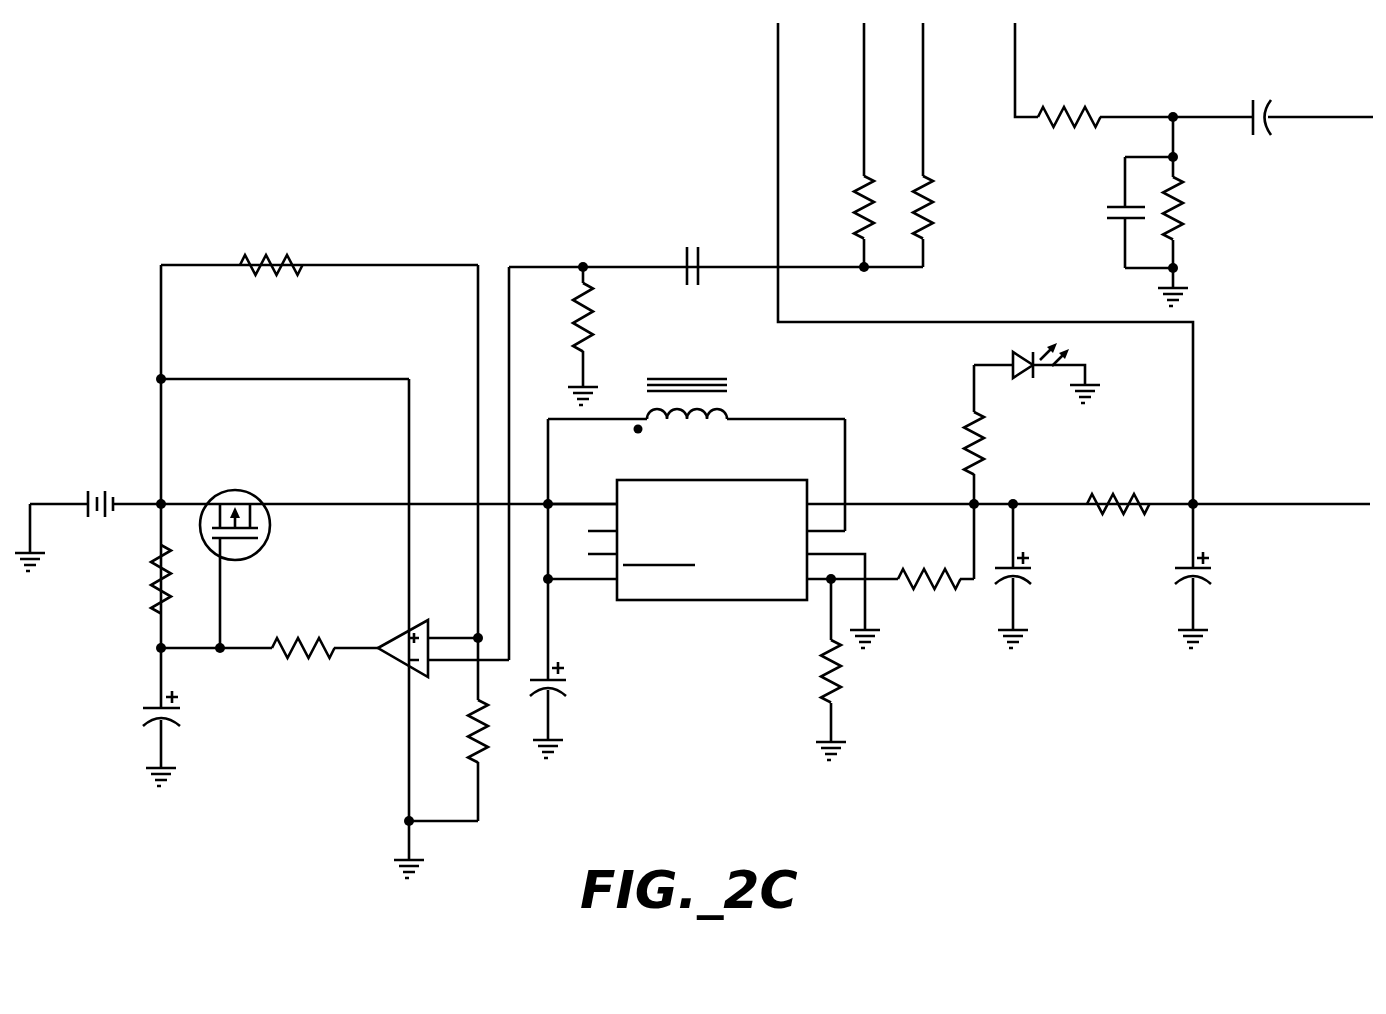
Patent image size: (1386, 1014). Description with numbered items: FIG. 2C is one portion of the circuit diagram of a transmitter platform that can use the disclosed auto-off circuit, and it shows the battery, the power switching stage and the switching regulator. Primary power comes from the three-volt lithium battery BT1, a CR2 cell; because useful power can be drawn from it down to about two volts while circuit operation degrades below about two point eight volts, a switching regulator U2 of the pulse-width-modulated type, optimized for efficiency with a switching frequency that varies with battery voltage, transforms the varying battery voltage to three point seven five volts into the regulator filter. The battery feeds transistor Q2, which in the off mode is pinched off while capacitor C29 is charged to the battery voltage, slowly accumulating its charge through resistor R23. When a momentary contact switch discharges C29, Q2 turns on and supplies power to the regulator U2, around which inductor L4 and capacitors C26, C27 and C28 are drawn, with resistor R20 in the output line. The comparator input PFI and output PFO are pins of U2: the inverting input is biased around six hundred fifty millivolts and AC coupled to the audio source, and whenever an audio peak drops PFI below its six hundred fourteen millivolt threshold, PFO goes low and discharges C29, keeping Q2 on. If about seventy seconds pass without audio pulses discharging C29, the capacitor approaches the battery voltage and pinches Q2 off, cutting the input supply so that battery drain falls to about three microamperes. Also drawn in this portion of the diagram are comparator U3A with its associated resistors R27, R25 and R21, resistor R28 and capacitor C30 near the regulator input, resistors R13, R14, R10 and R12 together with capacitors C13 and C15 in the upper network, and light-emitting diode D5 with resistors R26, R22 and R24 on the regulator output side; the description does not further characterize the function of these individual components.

The battery BT1 is at (98, 502).
The lithium battery CR2 is at (98, 502).
The resistor R23 is at (124, 583).
The capacitor C29 is at (125, 721).
The transistor Q2 is at (234, 538).
The resistor R27 22 R27 is at (287, 644).
The comparator U3A MIC7221BM5 U3A is at (352, 607).
The resistor R25 3.3M R25 is at (271, 272).
The resistor R21 82K R21 is at (451, 733).
The resistor R28 100K R28 is at (553, 324).
The capacitor C30 .1uF C30 is at (691, 272).
The capacitor C26 10uF C26 is at (580, 691).
The inductor L4 47uH L4 is at (681, 400).
The switching regulator U2 is at (710, 547).
The resistor R13 N/U R13 is at (834, 206).
The resistor R14 4.7K R14 is at (956, 206).
The resistor R10 1.5K R10 is at (1071, 122).
The capacitor C13 10uF C13 is at (1275, 122).
The capacitor C15 N/U C15 is at (1095, 217).
The resistor R12 N/U R12 is at (1200, 211).
The LED D5 HSMC-S660 D5 is at (1055, 387).
The resistor R26 2.2K R26 is at (943, 452).
The resistor R22 2M R22 is at (929, 587).
The resistor R24 1M R24 is at (803, 673).
The resistor R20 10 R20 is at (1118, 508).
The capacitor C27 22uF 6V C27 is at (1067, 577).
The capacitor C28 47uF 6V C28 is at (1247, 577).